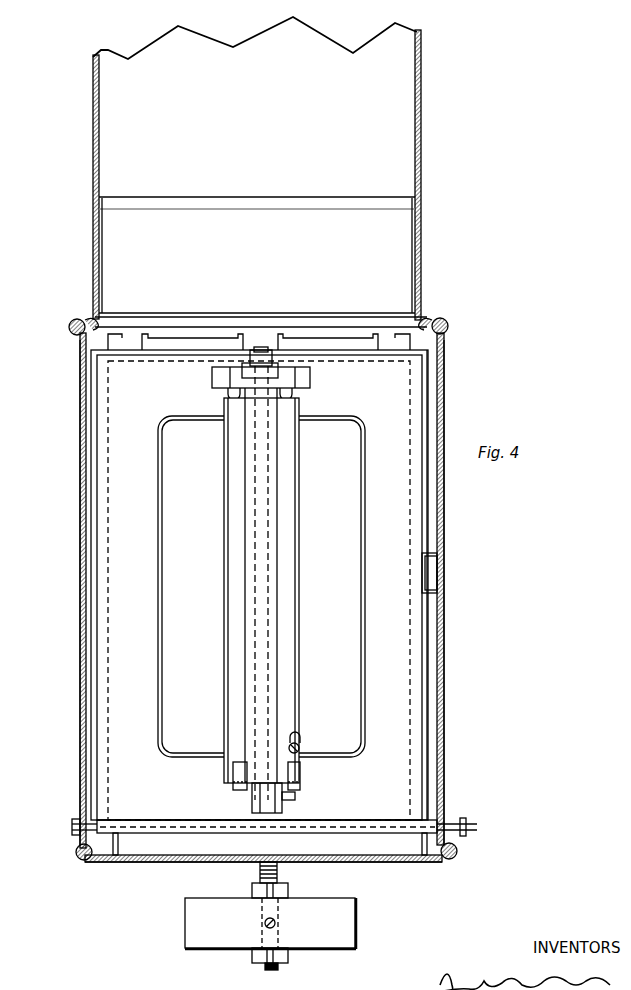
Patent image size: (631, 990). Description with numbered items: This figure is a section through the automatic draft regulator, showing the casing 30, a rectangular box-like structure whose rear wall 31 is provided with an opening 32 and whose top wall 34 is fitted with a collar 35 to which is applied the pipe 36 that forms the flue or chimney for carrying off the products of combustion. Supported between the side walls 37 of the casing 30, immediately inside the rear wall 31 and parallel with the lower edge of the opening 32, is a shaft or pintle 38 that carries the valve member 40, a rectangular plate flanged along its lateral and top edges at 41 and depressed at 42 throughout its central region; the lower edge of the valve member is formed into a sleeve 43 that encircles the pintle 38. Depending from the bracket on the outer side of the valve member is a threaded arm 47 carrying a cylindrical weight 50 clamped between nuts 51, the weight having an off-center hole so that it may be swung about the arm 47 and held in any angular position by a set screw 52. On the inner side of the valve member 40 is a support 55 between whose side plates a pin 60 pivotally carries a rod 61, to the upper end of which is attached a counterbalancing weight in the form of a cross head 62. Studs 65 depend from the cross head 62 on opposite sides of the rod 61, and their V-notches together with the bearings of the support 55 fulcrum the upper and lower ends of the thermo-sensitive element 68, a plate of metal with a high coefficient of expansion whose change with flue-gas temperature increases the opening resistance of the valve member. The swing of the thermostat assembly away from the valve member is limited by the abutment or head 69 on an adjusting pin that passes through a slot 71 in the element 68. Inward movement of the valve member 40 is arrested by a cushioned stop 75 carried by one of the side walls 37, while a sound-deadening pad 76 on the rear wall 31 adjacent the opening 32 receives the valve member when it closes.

The casing 30 is at (155, 862).
The rear wall 31 is at (90, 525).
The opening 32 is at (115, 418).
The top wall 34 is at (90, 318).
The collar 35 is at (398, 240).
The pipe 36 is at (400, 115).
The side walls 37 is at (82, 452).
The shaft or pintle 38 is at (460, 818).
The valve member 40 is at (393, 502).
The flange 41 is at (423, 385).
The depressed central region 42 is at (343, 563).
The sleeve 43 is at (147, 820).
The arm 47 is at (280, 873).
The weight 50 is at (270, 923).
The nuts 51 is at (250, 890).
The set screw 52 is at (265, 922).
The support 55 is at (286, 807).
The pin 60 is at (250, 796).
The rod 61 is at (270, 498).
The cross head 62 is at (212, 378).
The studs 65 is at (227, 397).
The thermo-sensitive element 68 is at (240, 585).
The abutment or head 69 is at (300, 747).
The slot 71 is at (300, 736).
The stop 75 is at (422, 583).
The pad 76 is at (204, 328).